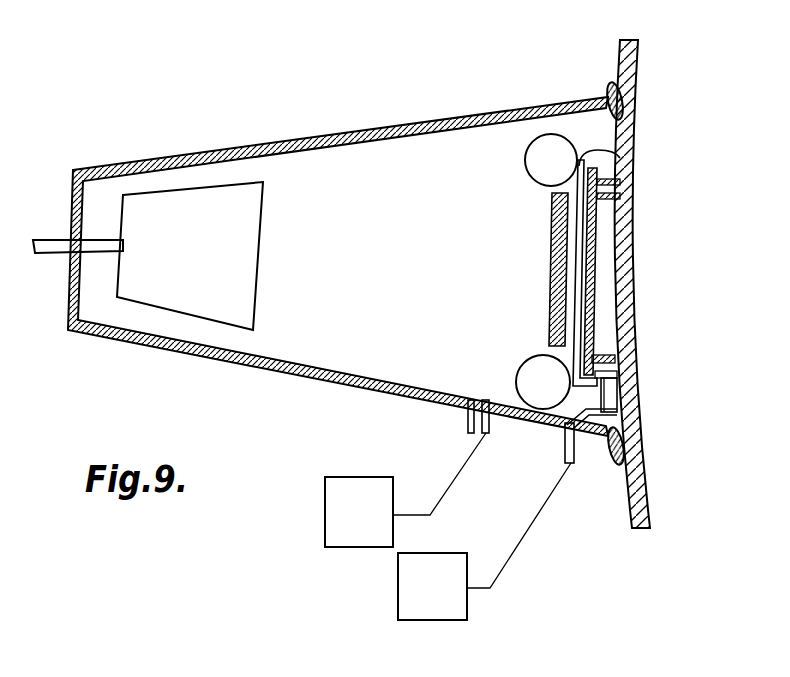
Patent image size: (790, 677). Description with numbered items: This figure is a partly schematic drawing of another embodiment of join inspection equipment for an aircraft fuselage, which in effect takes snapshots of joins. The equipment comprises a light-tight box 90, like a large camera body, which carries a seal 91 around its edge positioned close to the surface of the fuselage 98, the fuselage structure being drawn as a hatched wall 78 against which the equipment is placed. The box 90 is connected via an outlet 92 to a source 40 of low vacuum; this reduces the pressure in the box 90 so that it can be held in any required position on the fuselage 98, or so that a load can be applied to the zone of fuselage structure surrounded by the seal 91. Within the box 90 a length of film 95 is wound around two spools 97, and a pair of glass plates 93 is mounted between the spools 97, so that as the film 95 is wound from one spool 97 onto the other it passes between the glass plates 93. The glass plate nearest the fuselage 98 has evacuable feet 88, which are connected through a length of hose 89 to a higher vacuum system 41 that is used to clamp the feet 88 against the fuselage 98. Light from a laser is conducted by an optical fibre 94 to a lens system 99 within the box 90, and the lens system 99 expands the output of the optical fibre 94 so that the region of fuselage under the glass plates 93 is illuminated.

The source of low vacuum 40 is at (325, 513).
The higher vacuum system 41 is at (398, 605).
The wall 78 is at (640, 67).
The evacuable feet 88 is at (620, 365).
The hose 89 is at (617, 405).
The light-tight box 90 is at (372, 133).
The seal 91 is at (612, 85).
The outlet 92 is at (480, 398).
The glass plates 93 is at (595, 247).
The optical fibre 94 is at (60, 242).
The film 95 is at (630, 157).
The spools 97 is at (548, 150).
The fuselage 98 is at (633, 290).
The lens system 99 is at (195, 203).